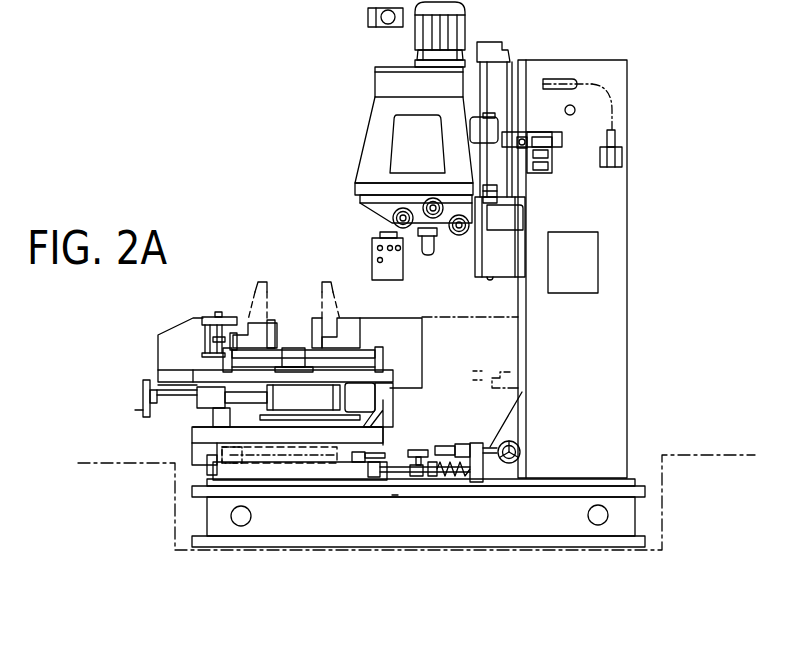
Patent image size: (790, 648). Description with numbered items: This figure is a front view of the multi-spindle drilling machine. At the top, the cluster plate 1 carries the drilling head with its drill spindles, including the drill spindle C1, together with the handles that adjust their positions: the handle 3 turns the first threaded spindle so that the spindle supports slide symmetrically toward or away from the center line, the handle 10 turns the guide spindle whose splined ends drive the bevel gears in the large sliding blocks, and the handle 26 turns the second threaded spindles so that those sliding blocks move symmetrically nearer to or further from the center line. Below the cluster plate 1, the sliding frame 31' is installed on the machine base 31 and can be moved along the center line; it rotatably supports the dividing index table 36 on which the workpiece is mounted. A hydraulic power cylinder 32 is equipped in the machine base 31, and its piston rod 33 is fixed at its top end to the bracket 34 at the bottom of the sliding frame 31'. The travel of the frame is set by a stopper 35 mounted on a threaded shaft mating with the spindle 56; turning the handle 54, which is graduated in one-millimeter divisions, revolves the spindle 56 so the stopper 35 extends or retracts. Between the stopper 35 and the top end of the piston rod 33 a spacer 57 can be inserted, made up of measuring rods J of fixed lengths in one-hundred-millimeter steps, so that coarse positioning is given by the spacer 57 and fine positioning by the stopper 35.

The cluster plate 1 is at (408, 197).
The handle 3 is at (434, 200).
The handle 26 is at (393, 219).
The handle 10 is at (458, 236).
The drill spindle C1 is at (430, 256).
The dividing index table 36 is at (393, 370).
The hydraulic power cylinder 32 is at (292, 464).
The bracket 34 is at (358, 463).
The piston rod 33 is at (384, 455).
The sliding frame 31' is at (398, 420).
The machine base 31 is at (455, 427).
The stopper 35 is at (473, 444).
The spindle 56 is at (487, 447).
The handle 54 is at (521, 450).
The spacer 57 is at (418, 477).
The measuring rod J is at (414, 452).